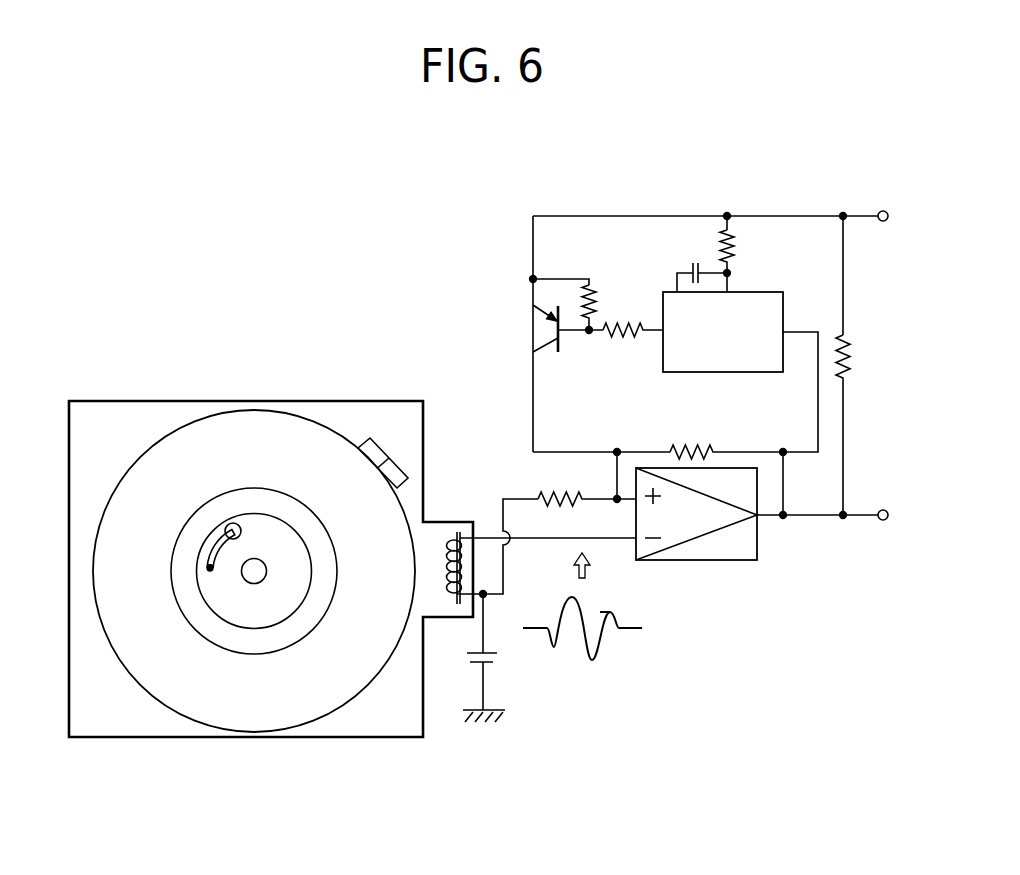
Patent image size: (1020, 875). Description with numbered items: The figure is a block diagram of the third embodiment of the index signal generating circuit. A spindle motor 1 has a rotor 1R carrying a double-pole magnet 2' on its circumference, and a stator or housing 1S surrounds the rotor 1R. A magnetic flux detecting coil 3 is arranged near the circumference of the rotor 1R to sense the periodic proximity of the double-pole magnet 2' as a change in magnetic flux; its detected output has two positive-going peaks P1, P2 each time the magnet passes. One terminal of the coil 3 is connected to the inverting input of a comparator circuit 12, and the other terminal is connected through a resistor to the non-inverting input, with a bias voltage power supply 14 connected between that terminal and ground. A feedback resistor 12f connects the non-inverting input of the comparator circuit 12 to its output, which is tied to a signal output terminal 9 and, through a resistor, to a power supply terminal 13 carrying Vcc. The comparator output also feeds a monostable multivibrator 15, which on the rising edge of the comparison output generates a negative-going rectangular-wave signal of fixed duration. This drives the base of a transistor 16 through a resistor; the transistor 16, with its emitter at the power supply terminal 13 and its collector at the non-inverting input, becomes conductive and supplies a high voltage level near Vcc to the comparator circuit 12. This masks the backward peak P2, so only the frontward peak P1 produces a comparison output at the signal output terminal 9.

The spindle motor 1 is at (254, 528).
The rotor 1R is at (310, 440).
The stator housing 1S is at (382, 730).
The double-pole magnet 2' is at (416, 444).
The magnetic flux detecting coil 3 is at (445, 556).
The signal output terminal 9 is at (889, 514).
The comparator circuit 12 is at (757, 545).
The feedback resistor 12f is at (701, 444).
The power supply terminal 13 is at (886, 221).
The bias voltage power supply 14 is at (495, 660).
The monostable multivibrator 15 is at (752, 290).
The transistor 16 is at (538, 330).
The frontward positive-going peak P1 is at (578, 604).
The backward positive-going peak P2 is at (616, 620).